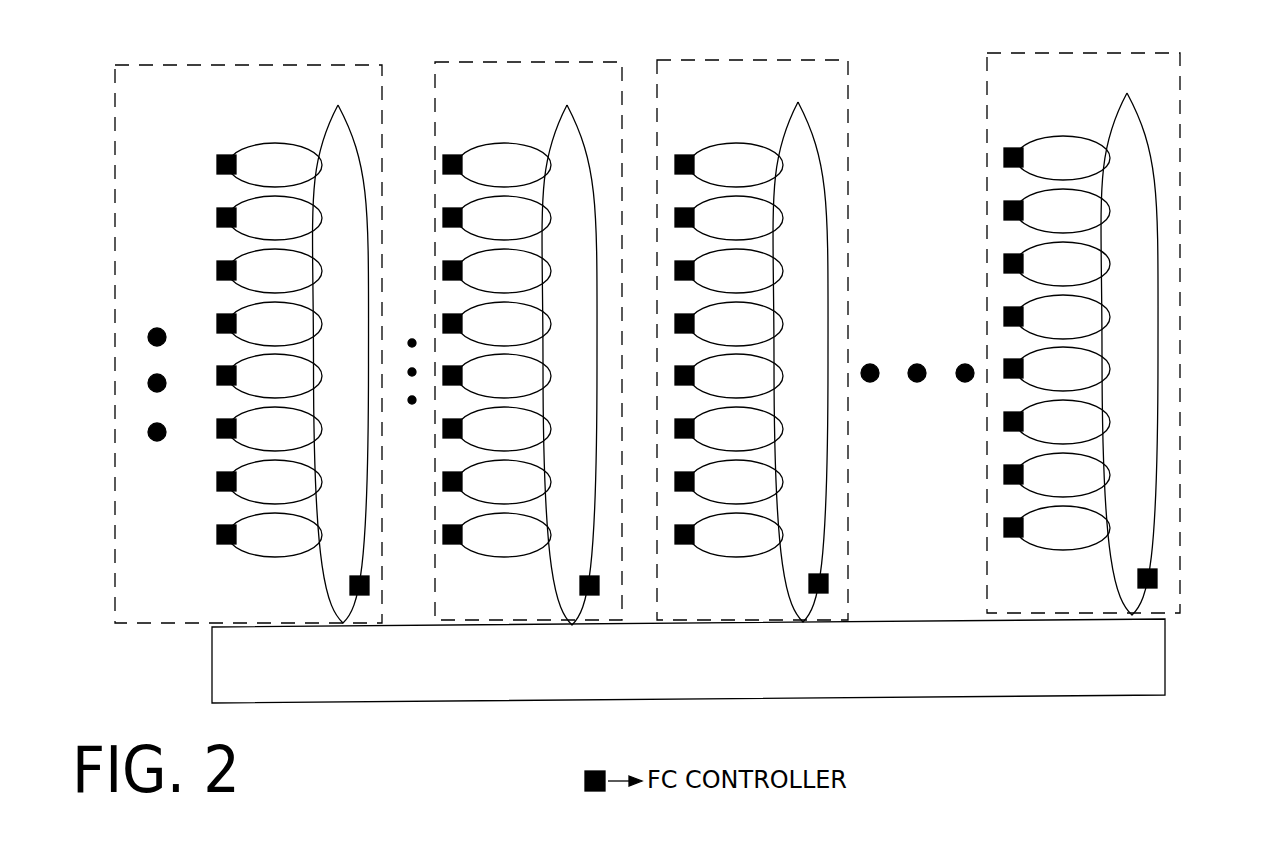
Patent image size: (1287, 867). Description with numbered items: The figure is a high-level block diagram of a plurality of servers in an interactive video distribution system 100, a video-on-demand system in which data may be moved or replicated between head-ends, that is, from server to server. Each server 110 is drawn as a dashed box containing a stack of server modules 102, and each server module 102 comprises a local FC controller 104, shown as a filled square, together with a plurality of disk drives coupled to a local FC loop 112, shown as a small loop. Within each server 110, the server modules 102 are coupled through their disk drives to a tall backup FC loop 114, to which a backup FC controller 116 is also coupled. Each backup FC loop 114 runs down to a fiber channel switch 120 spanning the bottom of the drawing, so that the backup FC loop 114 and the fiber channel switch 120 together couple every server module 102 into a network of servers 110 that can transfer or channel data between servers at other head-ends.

The interactive video distribution system 100 is at (1269, 106).
The server module 102 is at (198, 167).
The local FC controller 104 is at (445, 167).
The server 110 is at (293, 64).
The local FC loop 112 is at (277, 143).
The backup FC loop 114 is at (338, 105).
The backup FC controller 116 is at (368, 580).
The fiber channel switch 120 is at (1049, 695).